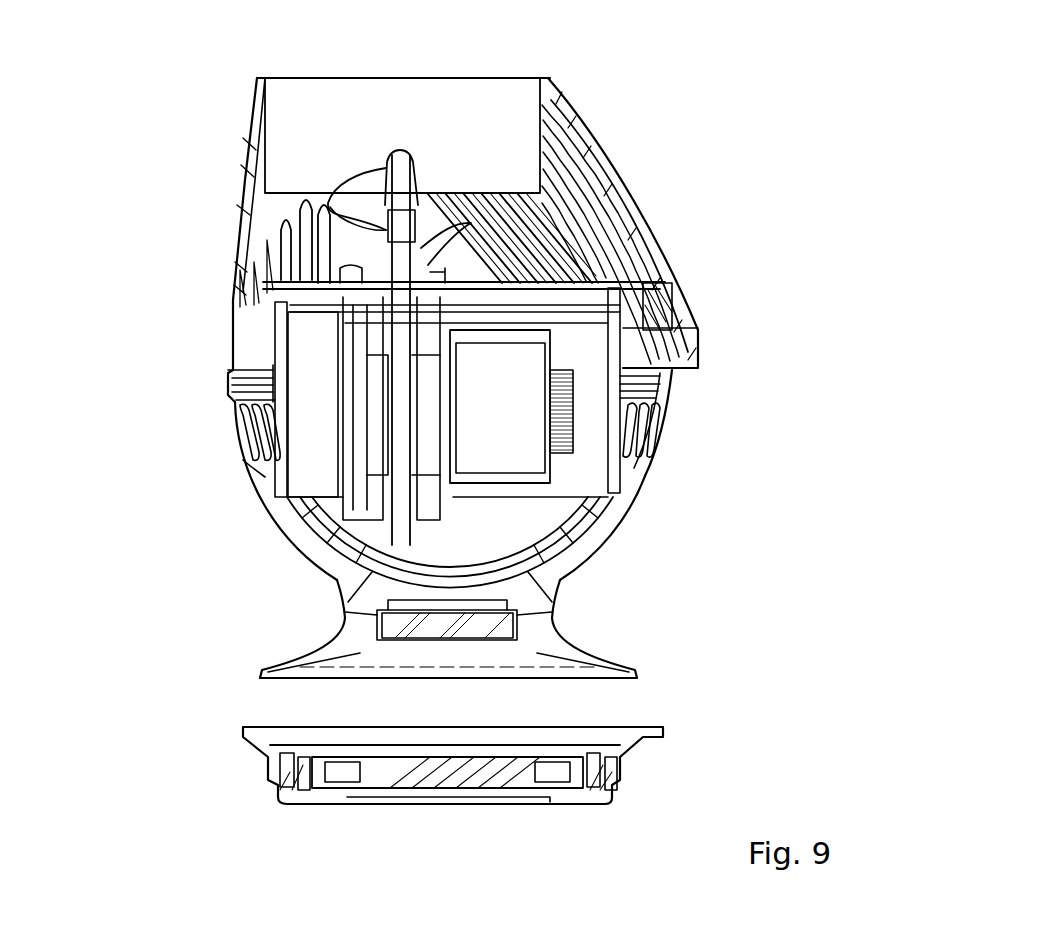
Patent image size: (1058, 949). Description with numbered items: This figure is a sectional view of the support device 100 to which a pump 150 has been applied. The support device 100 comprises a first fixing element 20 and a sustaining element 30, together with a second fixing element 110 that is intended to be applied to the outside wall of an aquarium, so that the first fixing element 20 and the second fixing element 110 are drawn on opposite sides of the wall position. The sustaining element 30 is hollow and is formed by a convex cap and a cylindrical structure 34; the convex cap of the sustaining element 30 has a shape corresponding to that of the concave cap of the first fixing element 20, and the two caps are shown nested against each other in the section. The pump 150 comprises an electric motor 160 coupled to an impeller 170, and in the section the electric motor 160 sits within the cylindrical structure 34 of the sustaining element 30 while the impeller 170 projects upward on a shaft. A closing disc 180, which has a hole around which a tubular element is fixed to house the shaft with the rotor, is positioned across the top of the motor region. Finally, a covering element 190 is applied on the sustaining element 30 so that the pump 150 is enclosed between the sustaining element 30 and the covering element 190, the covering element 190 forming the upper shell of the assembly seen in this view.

The covering element 190 is at (593, 143).
The closing disc 180 is at (605, 285).
The impeller 170 is at (328, 207).
The electric motor 160 is at (617, 328).
The pump 150 is at (575, 470).
The sustaining element 30 is at (258, 351).
The cylindrical structure 34 is at (280, 428).
The first fixing element 20 is at (580, 622).
The support device 100 is at (444, 708).
The second fixing element 110 is at (655, 755).